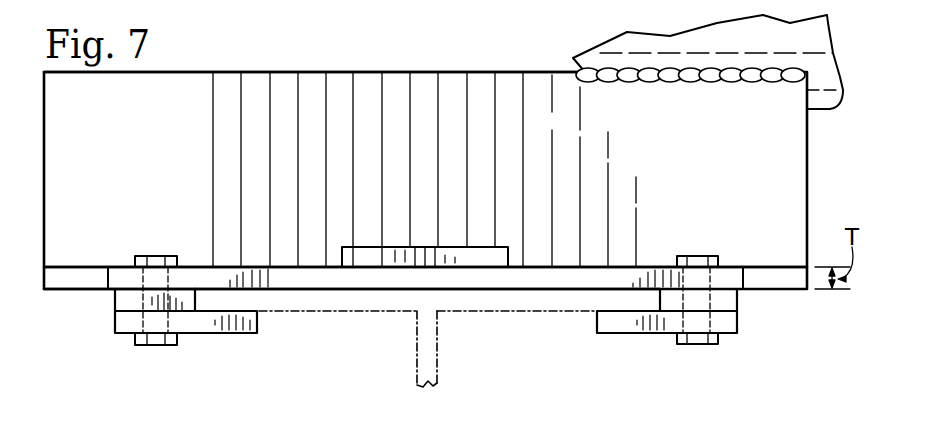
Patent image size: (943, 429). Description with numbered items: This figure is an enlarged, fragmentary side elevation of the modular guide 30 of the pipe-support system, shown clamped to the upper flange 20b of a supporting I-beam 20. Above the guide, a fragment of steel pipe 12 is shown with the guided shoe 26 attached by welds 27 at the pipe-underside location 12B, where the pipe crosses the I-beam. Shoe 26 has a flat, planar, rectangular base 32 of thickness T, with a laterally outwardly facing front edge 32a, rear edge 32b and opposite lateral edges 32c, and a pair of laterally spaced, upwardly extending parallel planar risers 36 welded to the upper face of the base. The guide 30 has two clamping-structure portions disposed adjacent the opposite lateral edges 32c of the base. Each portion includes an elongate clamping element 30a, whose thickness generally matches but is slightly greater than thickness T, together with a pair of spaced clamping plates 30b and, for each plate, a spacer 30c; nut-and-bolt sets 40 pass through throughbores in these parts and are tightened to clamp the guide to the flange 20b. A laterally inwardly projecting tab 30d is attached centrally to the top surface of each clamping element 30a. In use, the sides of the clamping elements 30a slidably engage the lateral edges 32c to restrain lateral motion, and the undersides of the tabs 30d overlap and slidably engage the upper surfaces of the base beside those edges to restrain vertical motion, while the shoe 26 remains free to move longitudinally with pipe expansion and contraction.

The pipe 12 is at (627, 45).
The pipe-underside location 12B is at (814, 113).
The guided shoe 26 is at (315, 68).
The weld 27 is at (678, 82).
The riser 36 is at (129, 128).
The base 32 is at (100, 265).
The front edge 32a is at (806, 282).
The rear edge 32b is at (92, 253).
The lateral edge 32c is at (73, 278).
The nut-and-bolt set 40 is at (170, 254).
The modular guide 30 is at (434, 298).
The clamping element 30a is at (685, 245).
The clamping plate 30b is at (198, 323).
The spacer 30c is at (120, 300).
The tab 30d is at (353, 260).
The I-beam 20 is at (396, 349).
The upper flange 20b is at (377, 312).